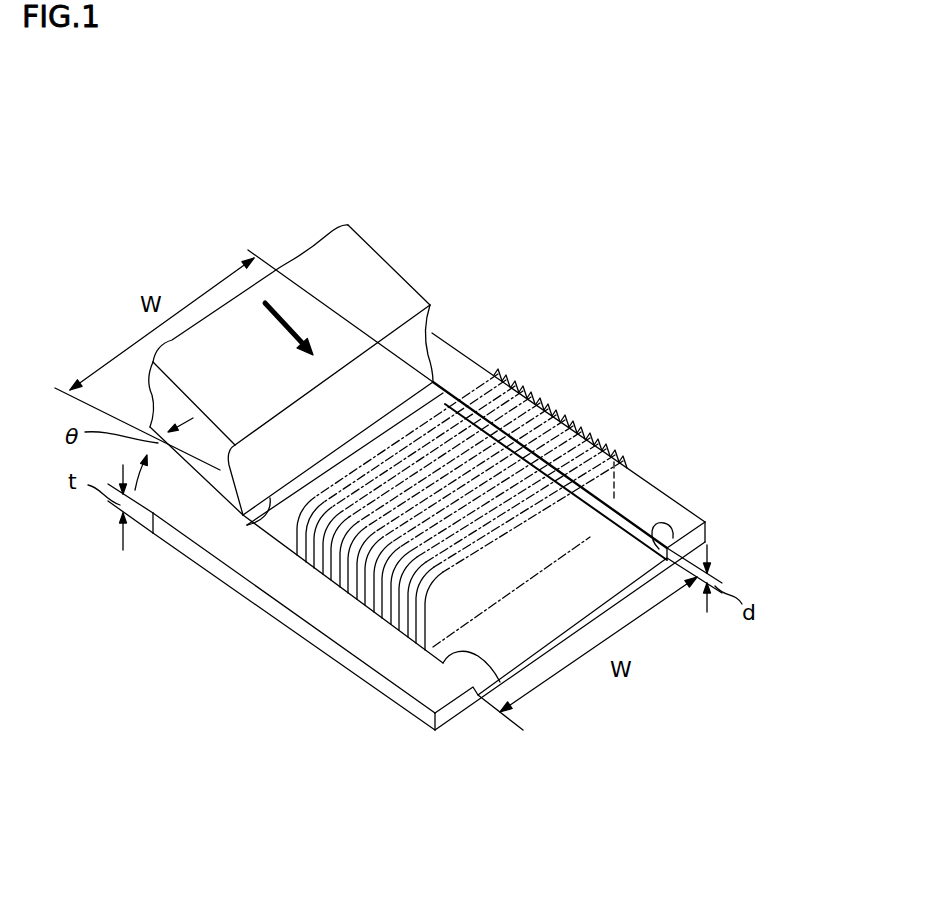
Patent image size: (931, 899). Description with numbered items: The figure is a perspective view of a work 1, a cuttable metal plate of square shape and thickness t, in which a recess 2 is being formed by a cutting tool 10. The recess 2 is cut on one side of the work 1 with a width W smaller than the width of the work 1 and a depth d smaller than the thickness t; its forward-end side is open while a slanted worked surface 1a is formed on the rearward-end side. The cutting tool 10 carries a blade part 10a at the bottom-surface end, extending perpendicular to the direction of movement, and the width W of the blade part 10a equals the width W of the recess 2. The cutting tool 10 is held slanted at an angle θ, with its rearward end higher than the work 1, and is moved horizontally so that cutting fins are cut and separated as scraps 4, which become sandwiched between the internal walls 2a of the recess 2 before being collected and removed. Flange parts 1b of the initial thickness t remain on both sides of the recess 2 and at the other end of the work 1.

The work 1 is at (299, 639).
The worked surface 1a is at (445, 393).
The flange part 1b is at (641, 494).
The recess 2 is at (620, 553).
The internal walls 2a is at (657, 533).
The scrap 4 is at (557, 410).
The cutting tool 10 is at (360, 263).
The blade part 10a is at (250, 522).